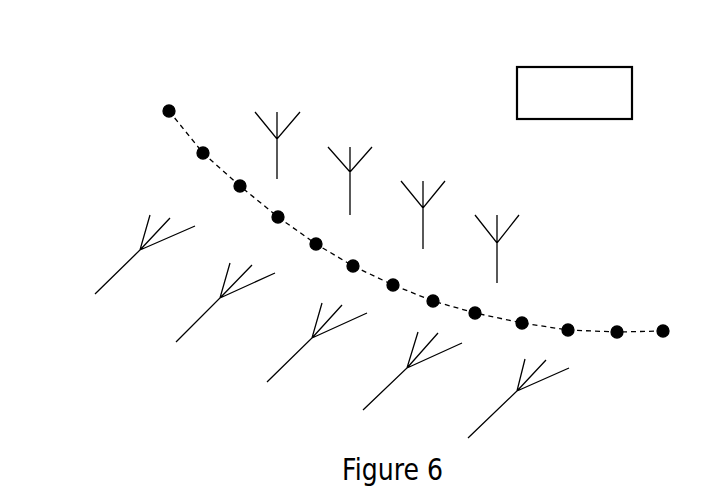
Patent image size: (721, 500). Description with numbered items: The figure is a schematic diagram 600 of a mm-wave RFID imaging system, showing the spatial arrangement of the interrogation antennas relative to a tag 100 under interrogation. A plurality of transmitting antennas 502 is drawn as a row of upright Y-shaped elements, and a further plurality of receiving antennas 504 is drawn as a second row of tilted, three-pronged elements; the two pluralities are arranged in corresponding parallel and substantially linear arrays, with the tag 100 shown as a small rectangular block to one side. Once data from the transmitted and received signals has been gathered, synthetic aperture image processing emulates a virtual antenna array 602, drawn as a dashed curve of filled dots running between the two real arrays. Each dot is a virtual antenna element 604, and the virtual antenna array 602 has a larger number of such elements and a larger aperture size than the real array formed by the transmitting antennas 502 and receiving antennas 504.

The schematic diagram 600 is at (105, 41).
The tag 100 is at (632, 95).
The virtual antenna array 602 is at (151, 96).
The virtual antenna element 604 is at (200, 157).
The transmitting antennas 502 is at (244, 110).
The receiving antennas 504 is at (539, 424).